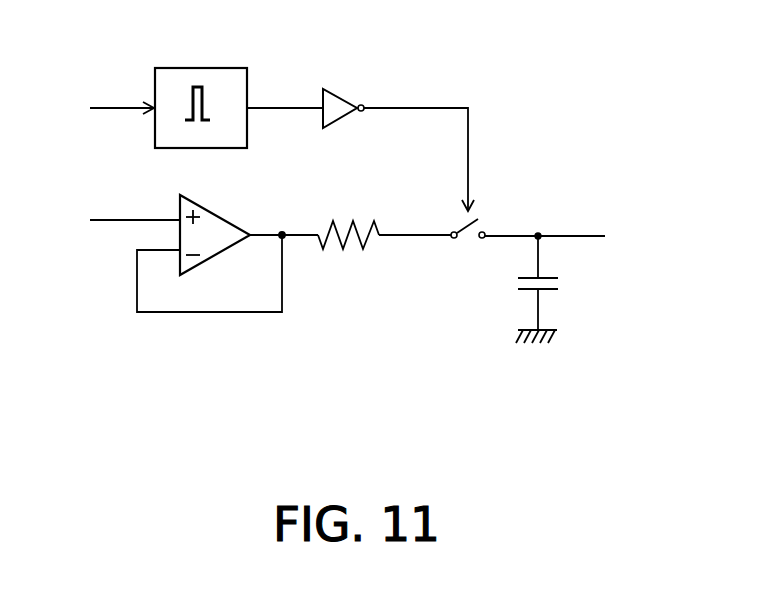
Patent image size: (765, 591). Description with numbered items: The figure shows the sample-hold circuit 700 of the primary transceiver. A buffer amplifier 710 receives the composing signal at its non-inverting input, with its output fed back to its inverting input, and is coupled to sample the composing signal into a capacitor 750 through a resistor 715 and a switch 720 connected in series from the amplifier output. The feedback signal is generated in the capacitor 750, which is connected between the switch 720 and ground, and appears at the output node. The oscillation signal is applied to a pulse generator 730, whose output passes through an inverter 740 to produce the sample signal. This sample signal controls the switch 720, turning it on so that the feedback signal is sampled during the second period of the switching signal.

The sample-hold circuit 700 is at (628, 476).
The buffer amplifier 710 is at (218, 211).
The resistor 715 is at (348, 215).
The switch 720 is at (490, 214).
The pulse generator 730 is at (230, 68).
The inverter 740 is at (346, 128).
The capacitor 750 is at (561, 289).